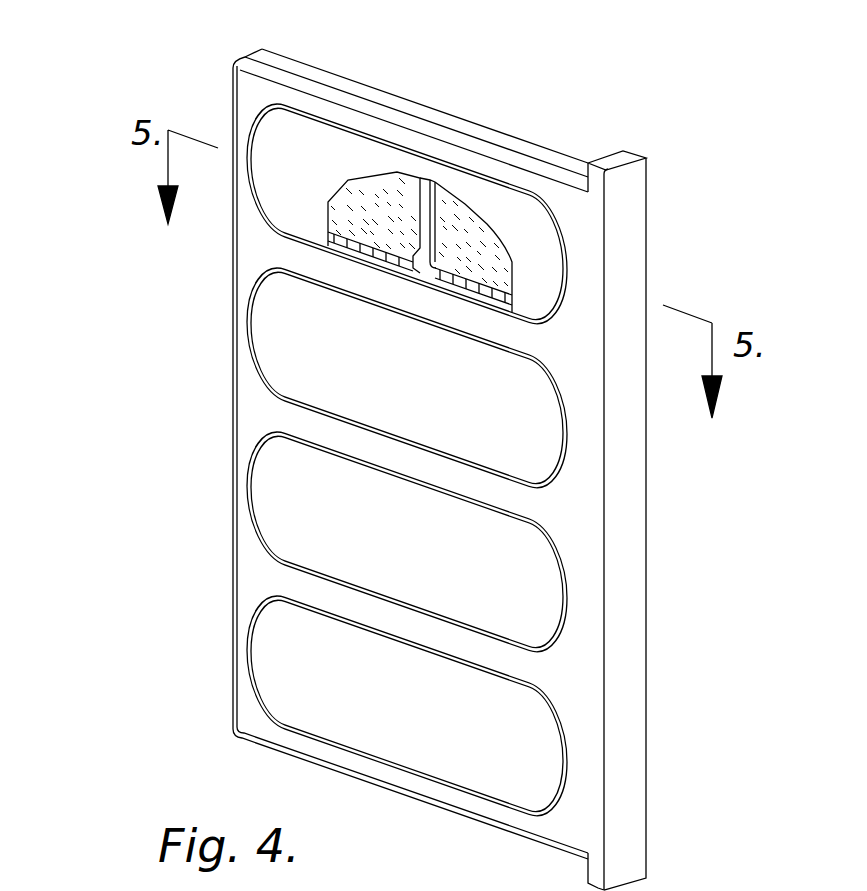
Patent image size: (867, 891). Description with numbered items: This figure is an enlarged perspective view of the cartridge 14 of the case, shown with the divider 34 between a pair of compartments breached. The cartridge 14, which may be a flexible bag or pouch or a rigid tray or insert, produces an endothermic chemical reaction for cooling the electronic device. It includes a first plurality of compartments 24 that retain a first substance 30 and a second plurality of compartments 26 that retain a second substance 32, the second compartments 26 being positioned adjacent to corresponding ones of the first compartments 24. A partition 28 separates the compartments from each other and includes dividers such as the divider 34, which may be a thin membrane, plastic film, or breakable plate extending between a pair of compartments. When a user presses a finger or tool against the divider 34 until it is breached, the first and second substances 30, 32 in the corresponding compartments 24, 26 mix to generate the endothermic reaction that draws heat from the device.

The cartridge 14 is at (672, 577).
The first plurality of compartments 24 is at (353, 208).
The second plurality of compartments 26 is at (480, 267).
The partition 28 is at (335, 267).
The first substance 30 is at (383, 197).
The second substance 32 is at (463, 233).
The divider 34 is at (410, 190).